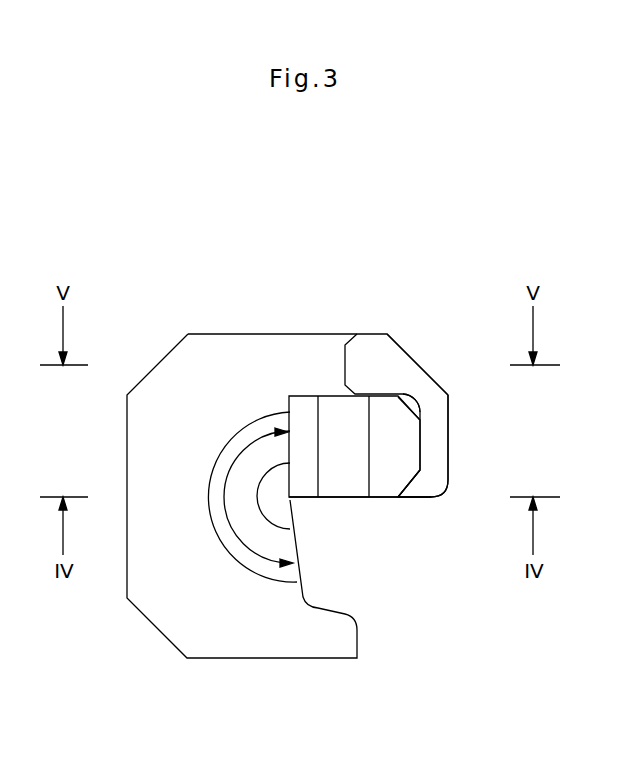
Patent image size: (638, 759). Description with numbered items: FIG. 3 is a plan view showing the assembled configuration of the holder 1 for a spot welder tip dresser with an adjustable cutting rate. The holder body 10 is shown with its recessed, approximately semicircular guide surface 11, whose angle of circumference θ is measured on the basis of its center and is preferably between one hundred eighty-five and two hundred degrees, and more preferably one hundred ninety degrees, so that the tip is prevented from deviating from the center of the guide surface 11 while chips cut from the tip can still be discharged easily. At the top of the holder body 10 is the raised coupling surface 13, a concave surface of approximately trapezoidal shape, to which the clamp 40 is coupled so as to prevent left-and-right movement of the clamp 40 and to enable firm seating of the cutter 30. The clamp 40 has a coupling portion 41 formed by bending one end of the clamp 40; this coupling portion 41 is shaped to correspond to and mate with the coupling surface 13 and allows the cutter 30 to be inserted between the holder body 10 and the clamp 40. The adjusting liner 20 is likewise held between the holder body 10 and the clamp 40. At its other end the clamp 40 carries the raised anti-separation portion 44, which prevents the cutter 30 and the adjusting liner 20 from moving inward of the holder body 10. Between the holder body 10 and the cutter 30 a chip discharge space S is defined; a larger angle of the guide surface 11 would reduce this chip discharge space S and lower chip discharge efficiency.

The holder 1 is at (207, 218).
The holder body 10 is at (195, 328).
The guide surface 11 is at (256, 564).
The coupling surface 13 is at (347, 361).
The adjusting liner 20 is at (418, 400).
The cutter 30 is at (330, 405).
The clamp 40 is at (457, 448).
The coupling portion 41 is at (377, 334).
The anti-separation portion 44 is at (412, 495).
The chip discharge space S is at (387, 556).